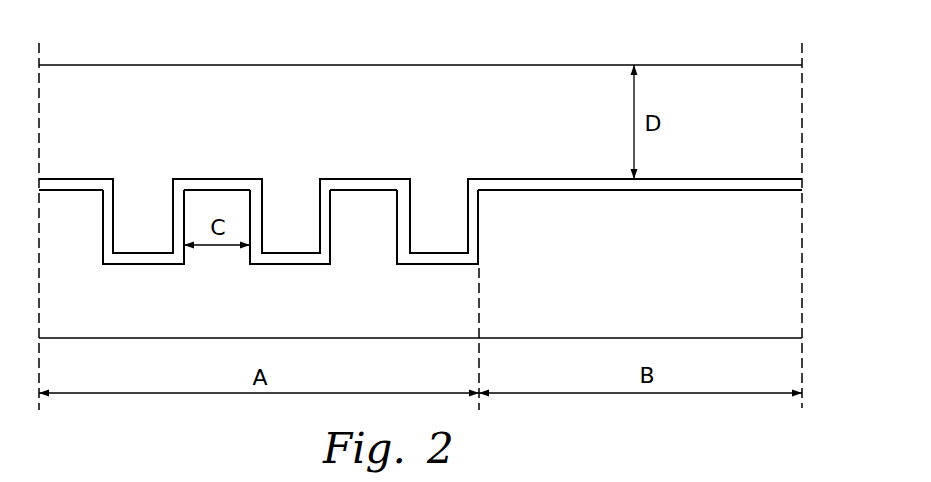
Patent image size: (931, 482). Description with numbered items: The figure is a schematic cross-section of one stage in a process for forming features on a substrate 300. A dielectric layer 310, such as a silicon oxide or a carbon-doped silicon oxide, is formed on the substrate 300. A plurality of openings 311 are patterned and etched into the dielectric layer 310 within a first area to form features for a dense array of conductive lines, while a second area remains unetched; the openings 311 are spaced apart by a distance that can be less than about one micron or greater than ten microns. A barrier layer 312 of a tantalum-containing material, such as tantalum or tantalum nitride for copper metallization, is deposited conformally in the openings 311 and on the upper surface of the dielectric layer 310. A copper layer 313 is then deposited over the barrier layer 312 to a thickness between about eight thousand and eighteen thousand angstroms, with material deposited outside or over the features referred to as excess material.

The substrate 300 is at (714, 32).
The dielectric layer 310 is at (783, 263).
The openings 311 is at (122, 220).
The barrier layer 312 is at (358, 178).
The copper layer 313 is at (438, 101).